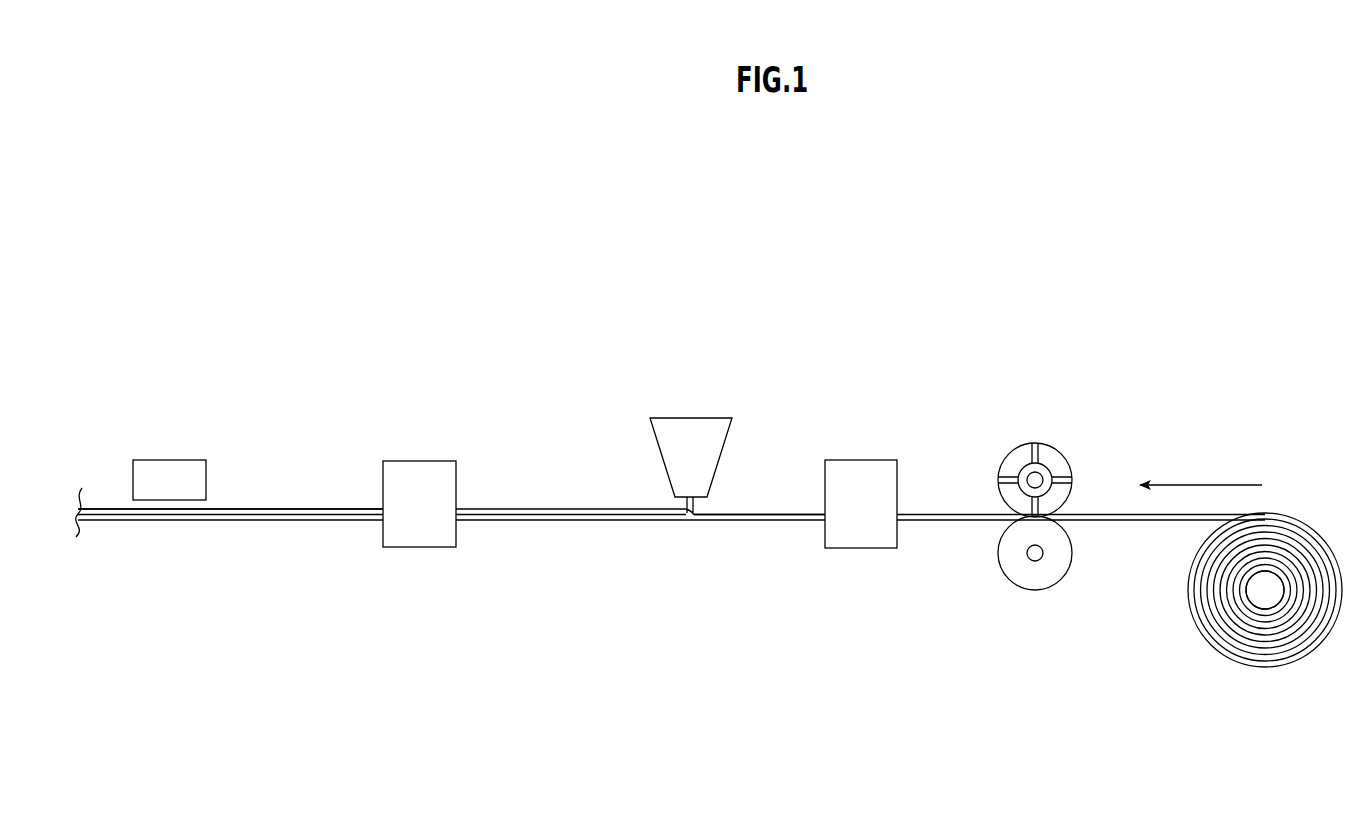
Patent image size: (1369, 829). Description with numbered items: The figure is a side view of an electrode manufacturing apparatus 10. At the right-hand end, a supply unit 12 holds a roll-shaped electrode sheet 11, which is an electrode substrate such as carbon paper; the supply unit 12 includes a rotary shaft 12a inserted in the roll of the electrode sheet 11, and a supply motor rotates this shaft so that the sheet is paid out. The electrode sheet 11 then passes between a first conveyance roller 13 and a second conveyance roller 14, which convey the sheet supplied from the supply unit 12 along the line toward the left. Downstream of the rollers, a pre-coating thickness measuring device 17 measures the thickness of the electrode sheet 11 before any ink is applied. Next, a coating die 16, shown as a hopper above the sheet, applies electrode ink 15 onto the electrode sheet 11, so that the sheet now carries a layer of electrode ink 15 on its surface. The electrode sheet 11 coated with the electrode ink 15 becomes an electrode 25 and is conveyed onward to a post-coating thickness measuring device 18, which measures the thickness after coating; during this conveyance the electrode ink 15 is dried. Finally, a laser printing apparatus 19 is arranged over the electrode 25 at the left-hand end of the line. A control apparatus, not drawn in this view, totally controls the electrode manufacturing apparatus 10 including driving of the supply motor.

The electrode manufacturing apparatus 10 is at (546, 348).
The electrode sheet 11 is at (1112, 512).
The supply unit 12 is at (1277, 680).
The rotary shaft 12a is at (1263, 600).
The first conveyance roller 13 is at (1020, 444).
The second conveyance roller 14 is at (1037, 590).
The electrode ink 15 is at (610, 508).
The coating die 16 is at (690, 417).
The pre-coating thickness measuring device 17 is at (860, 459).
The post-coating thickness measuring device 18 is at (420, 460).
The laser printing apparatus 19 is at (170, 459).
The electrode 25 is at (265, 508).